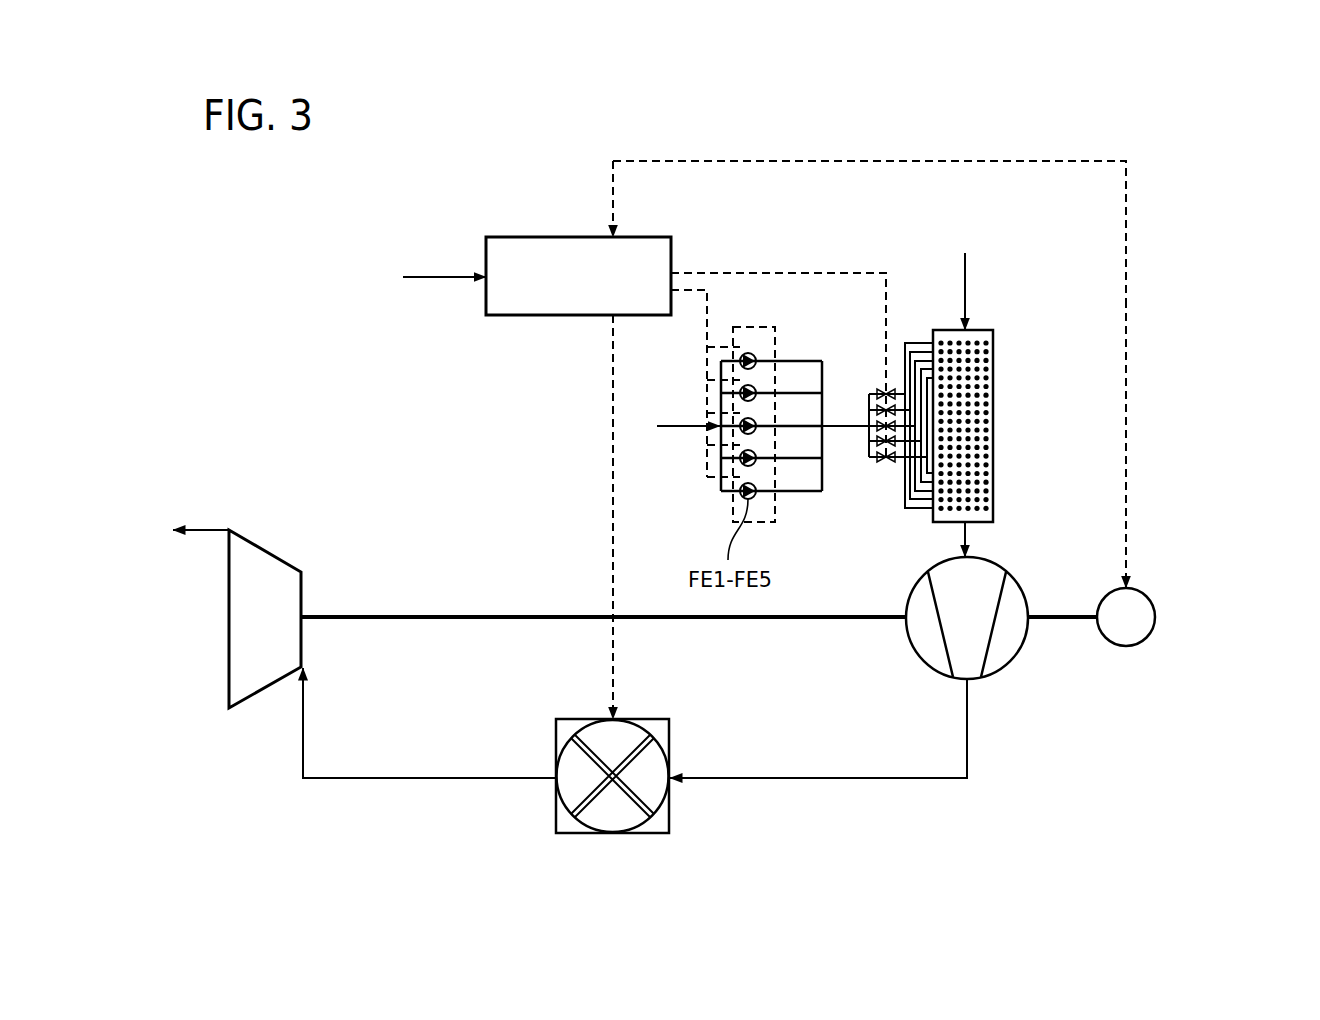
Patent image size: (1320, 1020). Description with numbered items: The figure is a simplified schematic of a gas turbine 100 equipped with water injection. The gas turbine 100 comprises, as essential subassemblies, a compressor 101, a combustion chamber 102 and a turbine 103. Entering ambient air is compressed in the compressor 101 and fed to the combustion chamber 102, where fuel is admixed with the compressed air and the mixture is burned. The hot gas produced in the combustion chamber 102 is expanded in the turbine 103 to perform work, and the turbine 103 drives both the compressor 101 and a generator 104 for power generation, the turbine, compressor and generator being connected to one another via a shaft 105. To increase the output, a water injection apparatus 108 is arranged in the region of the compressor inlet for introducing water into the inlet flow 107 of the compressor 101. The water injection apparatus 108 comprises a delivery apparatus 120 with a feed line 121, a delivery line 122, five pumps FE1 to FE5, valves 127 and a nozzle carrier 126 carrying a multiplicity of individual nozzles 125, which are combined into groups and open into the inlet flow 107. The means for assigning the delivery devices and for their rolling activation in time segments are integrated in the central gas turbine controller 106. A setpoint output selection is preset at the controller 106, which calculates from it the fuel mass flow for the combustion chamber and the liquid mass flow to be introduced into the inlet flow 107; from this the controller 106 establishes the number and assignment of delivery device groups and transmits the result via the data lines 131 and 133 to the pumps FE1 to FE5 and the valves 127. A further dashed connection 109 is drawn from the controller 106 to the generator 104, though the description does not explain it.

The gas turbine 100 is at (305, 308).
The compressor 101 is at (1010, 663).
The combustion chamber 102 is at (556, 742).
The turbine 103 is at (268, 548).
The generator 104 is at (1148, 635).
The shaft 105 is at (413, 615).
The central gas turbine controller 106 is at (537, 237).
The inlet flow 107 is at (965, 262).
The water injection apparatus 108 is at (1176, 230).
The generator signal line 109 is at (1126, 378).
The delivery apparatus 120 is at (782, 128).
The feed line 121 is at (675, 413).
The delivery line 122 is at (838, 422).
The individual nozzles 125 is at (993, 452).
The nozzle carrier 126 is at (983, 330).
The valves 127 is at (883, 463).
The data line 131 is at (707, 303).
The data line 133 is at (748, 272).